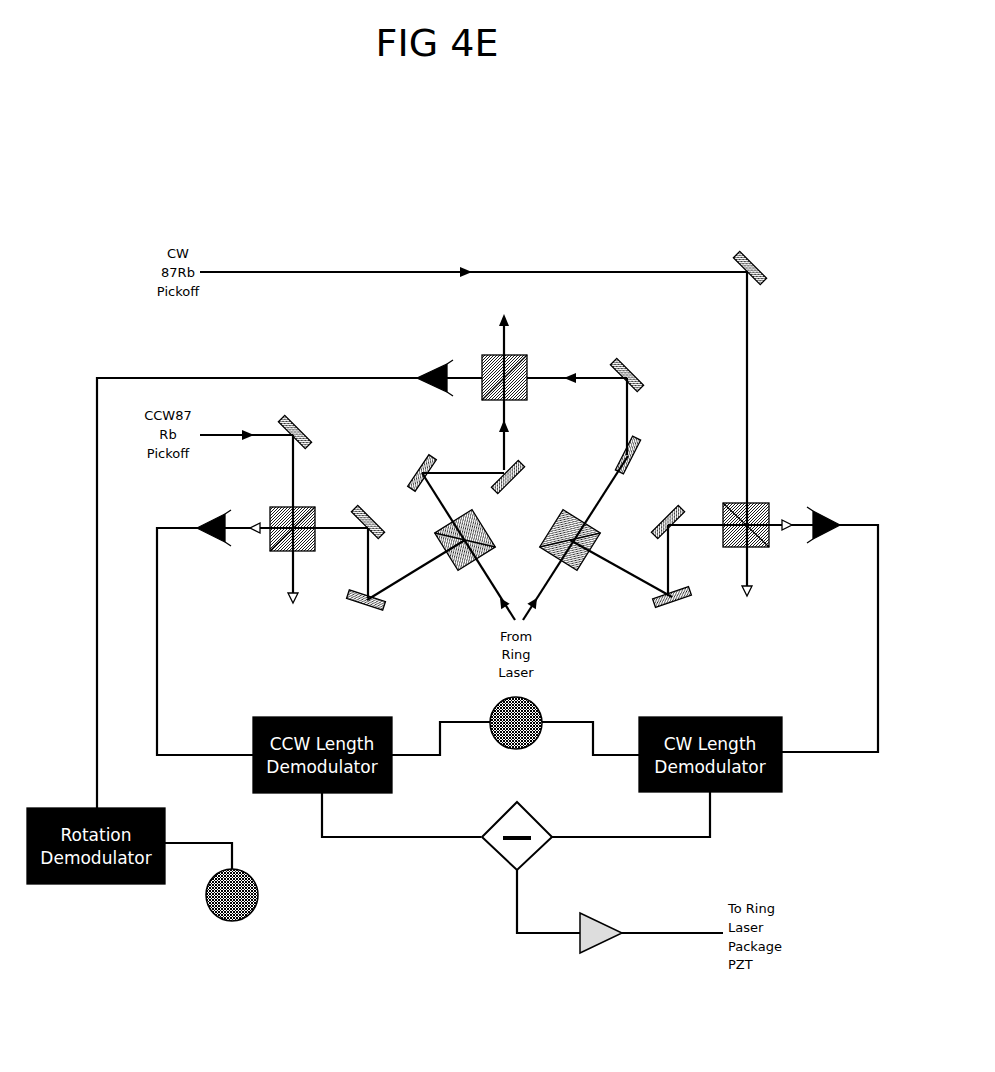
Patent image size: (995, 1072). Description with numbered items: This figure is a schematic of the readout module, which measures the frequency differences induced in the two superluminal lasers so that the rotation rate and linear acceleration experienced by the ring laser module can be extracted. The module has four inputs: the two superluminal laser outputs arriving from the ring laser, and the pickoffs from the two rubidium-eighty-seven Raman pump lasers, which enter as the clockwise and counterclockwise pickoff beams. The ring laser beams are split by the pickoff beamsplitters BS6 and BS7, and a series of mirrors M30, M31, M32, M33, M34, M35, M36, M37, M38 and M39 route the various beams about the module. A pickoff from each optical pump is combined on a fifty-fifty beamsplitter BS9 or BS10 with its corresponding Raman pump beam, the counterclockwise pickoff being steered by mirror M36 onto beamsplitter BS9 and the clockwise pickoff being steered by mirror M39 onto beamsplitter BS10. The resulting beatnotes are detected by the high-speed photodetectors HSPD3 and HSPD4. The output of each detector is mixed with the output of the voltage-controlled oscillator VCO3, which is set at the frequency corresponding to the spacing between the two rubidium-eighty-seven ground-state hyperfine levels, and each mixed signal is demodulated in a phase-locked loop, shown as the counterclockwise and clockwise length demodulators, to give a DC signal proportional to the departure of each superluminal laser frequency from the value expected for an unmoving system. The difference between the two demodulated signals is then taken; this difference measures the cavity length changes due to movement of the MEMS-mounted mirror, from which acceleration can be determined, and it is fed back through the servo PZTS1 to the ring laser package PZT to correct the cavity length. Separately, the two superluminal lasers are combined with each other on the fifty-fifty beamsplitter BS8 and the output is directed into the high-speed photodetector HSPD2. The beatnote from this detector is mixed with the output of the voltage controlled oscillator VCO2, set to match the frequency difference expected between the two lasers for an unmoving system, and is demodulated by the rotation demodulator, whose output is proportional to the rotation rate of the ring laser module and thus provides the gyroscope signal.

The mirror M30 is at (411, 473).
The mirror M31 is at (517, 477).
The mirror M32 is at (641, 455).
The mirror M33 is at (637, 374).
The mirror M34 is at (366, 609).
The mirror M35 is at (376, 521).
The mirror M36 is at (305, 431).
The mirror M37 is at (673, 605).
The mirror M38 is at (661, 521).
The mirror M39 is at (761, 267).
The optical pump pickoff beamsplitter BS6 is at (465, 550).
The optical pump pickoff beamsplitter BS7 is at (570, 550).
The 50/50 beamsplitter BS8 is at (511, 386).
The 50/50 beamsplitter BS9 is at (298, 538).
The 50/50 beamsplitter BS10 is at (741, 536).
The high-speed photodetector HSPD2 is at (435, 386).
The high-speed photodetector HSPD3 is at (213, 537).
The high-speed photodetector HSPD4 is at (831, 534).
The voltage controlled oscillator VCO2 is at (232, 907).
The voltage-controlled oscillator VCO3 is at (516, 734).
The servo PZTS1 is at (605, 925).